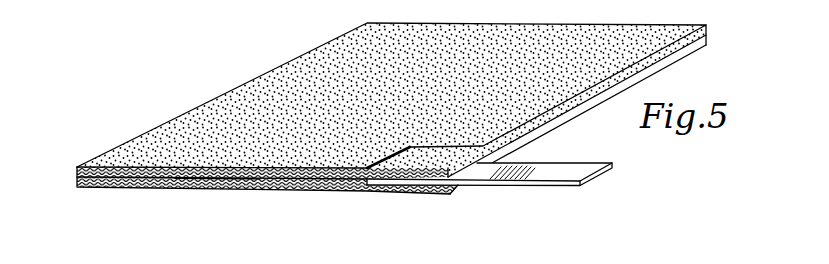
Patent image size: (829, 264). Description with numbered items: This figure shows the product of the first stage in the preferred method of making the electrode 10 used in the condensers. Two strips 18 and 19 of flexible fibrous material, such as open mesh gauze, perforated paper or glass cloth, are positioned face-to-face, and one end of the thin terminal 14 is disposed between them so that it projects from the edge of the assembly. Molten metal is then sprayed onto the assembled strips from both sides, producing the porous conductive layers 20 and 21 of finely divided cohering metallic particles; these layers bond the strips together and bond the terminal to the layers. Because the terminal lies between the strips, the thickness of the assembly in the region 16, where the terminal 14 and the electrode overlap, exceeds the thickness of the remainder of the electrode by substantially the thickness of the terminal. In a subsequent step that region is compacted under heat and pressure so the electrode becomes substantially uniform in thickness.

The electrode 10 is at (147, 192).
The terminal 14 is at (557, 170).
The region 16 is at (430, 157).
The strip 18 is at (77, 171).
The strip 19 is at (77, 181).
The conductive layer 20 is at (352, 44).
The conductive layer 21 is at (231, 190).